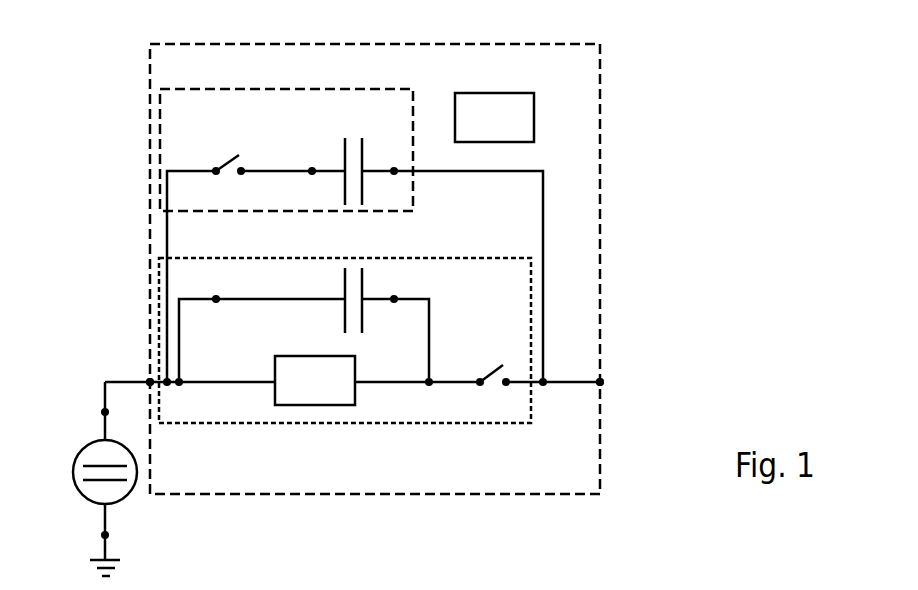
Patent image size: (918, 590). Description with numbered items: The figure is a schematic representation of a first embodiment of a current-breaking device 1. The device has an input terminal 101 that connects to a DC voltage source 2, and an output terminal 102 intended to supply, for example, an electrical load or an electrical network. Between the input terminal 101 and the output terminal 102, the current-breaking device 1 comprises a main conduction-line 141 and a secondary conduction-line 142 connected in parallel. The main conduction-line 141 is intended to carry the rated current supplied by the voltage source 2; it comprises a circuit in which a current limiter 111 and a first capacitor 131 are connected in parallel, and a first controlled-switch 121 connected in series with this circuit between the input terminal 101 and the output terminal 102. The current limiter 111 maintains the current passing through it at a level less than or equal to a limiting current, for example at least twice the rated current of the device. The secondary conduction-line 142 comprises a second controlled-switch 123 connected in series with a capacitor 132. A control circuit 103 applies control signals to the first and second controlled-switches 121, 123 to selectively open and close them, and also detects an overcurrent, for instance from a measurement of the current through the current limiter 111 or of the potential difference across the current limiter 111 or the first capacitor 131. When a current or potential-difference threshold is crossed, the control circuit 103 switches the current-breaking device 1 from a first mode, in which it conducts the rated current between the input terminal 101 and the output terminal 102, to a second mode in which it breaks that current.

The current-breaking device 1 is at (149, 268).
The DC voltage source 2 is at (72, 472).
The input terminal 101 is at (148, 380).
The output terminal 102 is at (600, 384).
The control circuit 103 is at (534, 116).
The current limiter 111 is at (315, 405).
The first controlled-switch 121 is at (495, 373).
The second controlled-switch 123 is at (228, 160).
The first capacitor 131 is at (338, 292).
The capacitor 132 is at (337, 162).
The main conduction-line 141 is at (532, 340).
The secondary conduction-line 142 is at (160, 150).